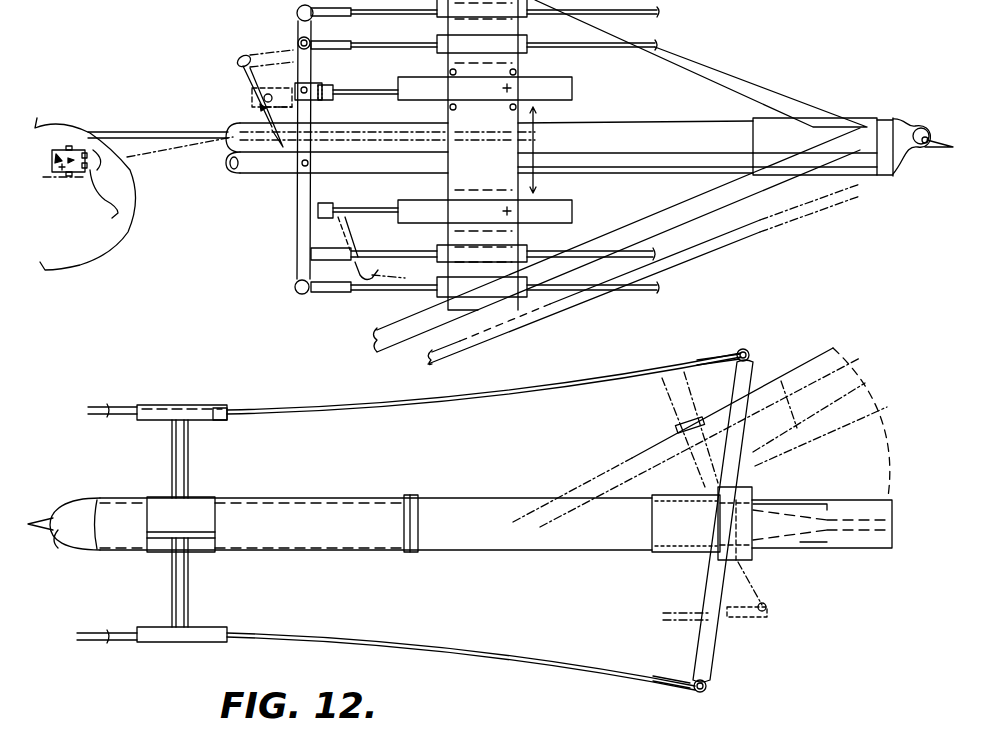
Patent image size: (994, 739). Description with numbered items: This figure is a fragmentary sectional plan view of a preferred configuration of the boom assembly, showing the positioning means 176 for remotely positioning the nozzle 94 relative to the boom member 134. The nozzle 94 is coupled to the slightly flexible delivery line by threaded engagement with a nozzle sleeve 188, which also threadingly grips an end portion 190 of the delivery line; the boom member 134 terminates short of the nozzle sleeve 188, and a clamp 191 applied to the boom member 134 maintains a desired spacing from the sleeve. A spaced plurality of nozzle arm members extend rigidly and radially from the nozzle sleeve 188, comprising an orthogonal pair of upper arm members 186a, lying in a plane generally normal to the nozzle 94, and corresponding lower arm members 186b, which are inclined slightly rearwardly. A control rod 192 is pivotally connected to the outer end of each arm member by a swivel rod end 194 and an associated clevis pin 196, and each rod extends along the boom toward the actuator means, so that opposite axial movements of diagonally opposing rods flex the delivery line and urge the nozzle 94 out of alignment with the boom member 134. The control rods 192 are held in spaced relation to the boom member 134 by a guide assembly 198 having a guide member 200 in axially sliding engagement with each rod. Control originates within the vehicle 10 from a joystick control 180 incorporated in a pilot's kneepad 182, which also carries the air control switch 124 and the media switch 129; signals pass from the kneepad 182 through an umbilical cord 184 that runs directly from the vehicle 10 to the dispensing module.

The vehicle 10 is at (105, 247).
The nozzle 94 is at (825, 548).
The air control switch 124 is at (92, 168).
The media switch 129 is at (85, 146).
The boom member 134 is at (343, 550).
The positioning means 176 is at (718, 653).
The joystick control 180 is at (45, 187).
The pilot's kneepad 182 is at (118, 212).
The umbilical cord 184 is at (167, 110).
The upper arm members 186a is at (753, 462).
The lower arm members 186b is at (706, 630).
The nozzle sleeve 188 is at (715, 553).
The end portion of the delivery line 190 is at (641, 552).
The clamp 191 is at (417, 556).
The control rod 192 is at (500, 633).
The swivel rod end 194 is at (742, 352).
The clevis pin 196 is at (752, 360).
The guide assembly 198 is at (190, 466).
The guide member 200 is at (233, 415).